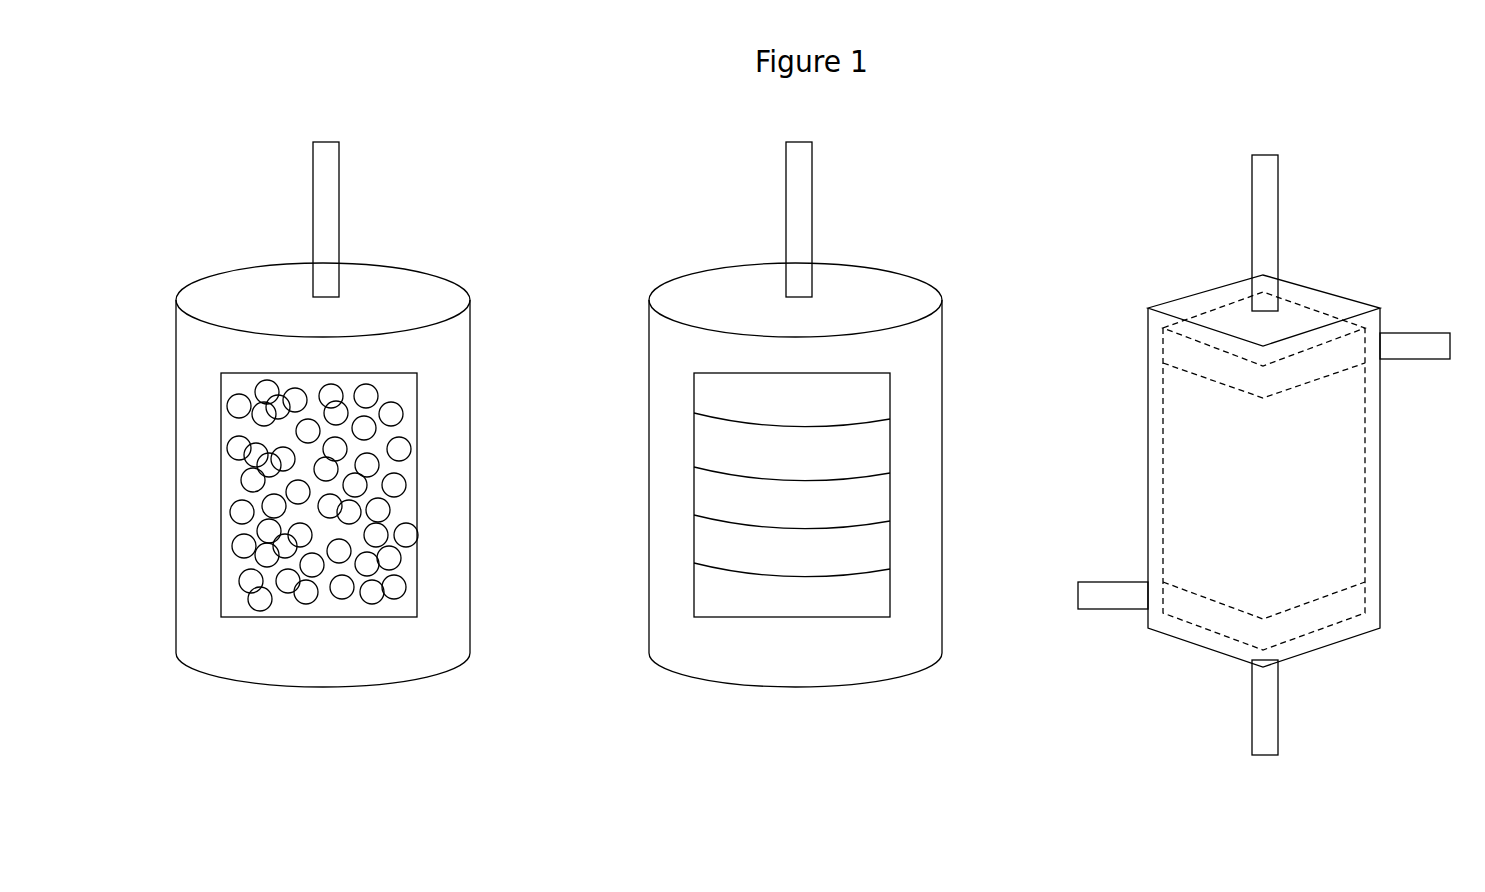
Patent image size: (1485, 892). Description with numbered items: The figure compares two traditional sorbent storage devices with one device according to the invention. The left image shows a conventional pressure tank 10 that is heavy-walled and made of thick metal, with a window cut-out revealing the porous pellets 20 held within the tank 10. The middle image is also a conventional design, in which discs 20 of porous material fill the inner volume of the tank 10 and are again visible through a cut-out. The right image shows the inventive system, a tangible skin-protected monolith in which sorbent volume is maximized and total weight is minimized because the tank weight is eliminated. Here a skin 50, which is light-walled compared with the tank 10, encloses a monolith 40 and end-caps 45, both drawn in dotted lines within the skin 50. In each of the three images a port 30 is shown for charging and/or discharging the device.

The pressure tank 10 is at (418, 268).
The porous pellets 20 is at (378, 583).
The port 30 is at (310, 191).
The monolith 40 is at (1162, 452).
The end-cap 45 is at (1164, 353).
The skin 50 is at (1325, 291).